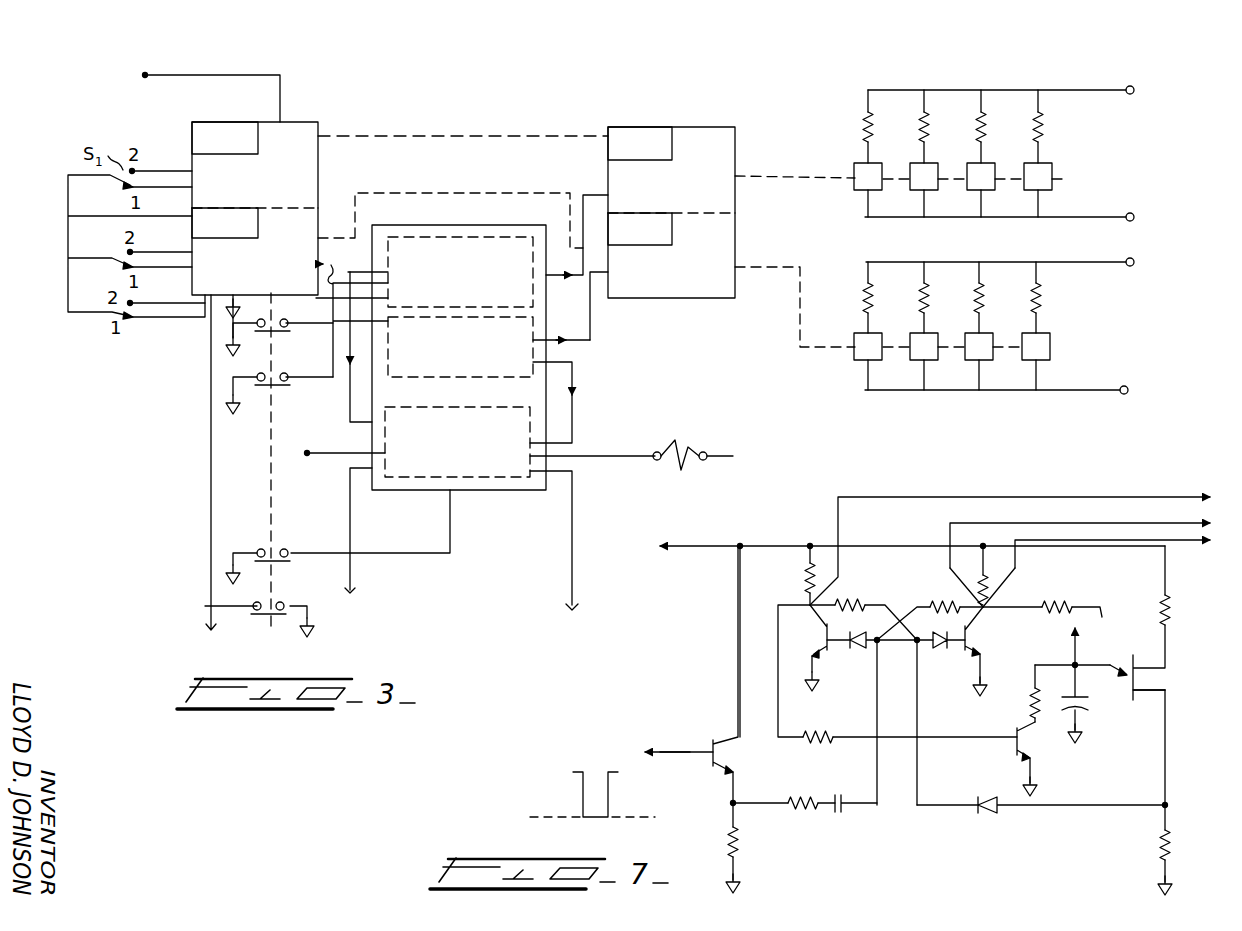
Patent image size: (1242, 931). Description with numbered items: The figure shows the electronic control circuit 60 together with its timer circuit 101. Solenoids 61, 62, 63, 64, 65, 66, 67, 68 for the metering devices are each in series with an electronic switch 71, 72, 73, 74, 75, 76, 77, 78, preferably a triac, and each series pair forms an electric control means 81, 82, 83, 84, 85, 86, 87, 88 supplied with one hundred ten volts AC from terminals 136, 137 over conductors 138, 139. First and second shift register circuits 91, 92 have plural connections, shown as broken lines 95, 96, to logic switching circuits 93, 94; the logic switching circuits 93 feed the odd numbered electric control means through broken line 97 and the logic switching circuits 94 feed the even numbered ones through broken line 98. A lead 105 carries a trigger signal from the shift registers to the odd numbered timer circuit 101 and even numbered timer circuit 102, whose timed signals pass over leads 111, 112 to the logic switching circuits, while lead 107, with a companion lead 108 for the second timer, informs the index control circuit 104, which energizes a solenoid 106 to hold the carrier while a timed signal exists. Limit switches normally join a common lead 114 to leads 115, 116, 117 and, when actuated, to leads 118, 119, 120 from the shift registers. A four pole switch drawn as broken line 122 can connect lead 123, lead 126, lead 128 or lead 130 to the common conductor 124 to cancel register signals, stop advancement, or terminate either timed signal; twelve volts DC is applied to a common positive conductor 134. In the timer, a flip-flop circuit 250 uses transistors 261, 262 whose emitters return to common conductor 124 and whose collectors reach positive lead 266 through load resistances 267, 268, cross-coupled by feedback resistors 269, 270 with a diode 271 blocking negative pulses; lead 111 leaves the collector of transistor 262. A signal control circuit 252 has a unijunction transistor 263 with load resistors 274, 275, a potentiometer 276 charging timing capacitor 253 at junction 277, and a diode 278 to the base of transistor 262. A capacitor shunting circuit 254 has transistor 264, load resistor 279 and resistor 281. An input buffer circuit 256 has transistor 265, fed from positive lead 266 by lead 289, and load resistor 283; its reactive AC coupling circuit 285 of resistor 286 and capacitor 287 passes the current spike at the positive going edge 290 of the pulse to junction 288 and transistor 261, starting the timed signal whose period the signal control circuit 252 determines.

In FIG. 3, the electronic control circuit 60 is at (730, 112).
In FIG. 3, the solenoid 61 is at (869, 120).
In FIG. 3, the solenoid 62 is at (865, 292).
In FIG. 3, the solenoid 63 is at (928, 118).
In FIG. 3, the solenoid 64 is at (932, 312).
In FIG. 3, the solenoid 65 is at (985, 118).
In FIG. 3, the solenoid 66 is at (982, 310).
In FIG. 3, the solenoid 67 is at (1036, 120).
In FIG. 3, the solenoid 68 is at (1040, 310).
In FIG. 3, the electronic switch 71 is at (857, 187).
In FIG. 3, the electronic switch 72 is at (855, 356).
In FIG. 3, the electronic switch 73 is at (915, 192).
In FIG. 3, the electronic switch 74 is at (918, 360).
In FIG. 3, the electronic switch 75 is at (993, 188).
In FIG. 3, the electronic switch 76 is at (978, 360).
In FIG. 3, the electronic switch 77 is at (1068, 180).
In FIG. 3, the electronic switch 78 is at (1024, 352).
In FIG. 3, the electric control means 81 is at (853, 150).
In FIG. 3, the electric control means 82 is at (858, 284).
In FIG. 3, the electric control means 83 is at (907, 130).
In FIG. 3, the electric control means 84 is at (914, 293).
In FIG. 3, the electric control means 85 is at (976, 130).
In FIG. 3, the electric control means 86 is at (990, 300).
In FIG. 3, the electric control means 87 is at (1050, 133).
In FIG. 3, the electric control means 88 is at (1048, 302).
In FIG. 3, the first shift register circuit 91 is at (275, 192).
In FIG. 3, the second shift register circuit 92 is at (289, 264).
In FIG. 3, the logic switching circuits 93 is at (706, 180).
In FIG. 3, the logic switching circuits 94 is at (706, 270).
In FIG. 3, the broken line 95 is at (404, 130).
In FIG. 3, the broken line 96 is at (430, 193).
In FIG. 3, the broken line 97 is at (792, 182).
In FIG. 3, the broken line 98 is at (775, 268).
In FIG. 3, the odd numbered timer circuit 101 is at (510, 273).
In FIG. 3, the even numbered timer circuit 102 is at (522, 345).
In FIG. 3, the index control circuit 104 is at (513, 462).
In FIG. 3, the lead 105 is at (352, 308).
In FIG. 7, the lead 105 is at (672, 757).
In FIG. 3, the solenoid 106 is at (686, 452).
In FIG. 3, the lead 107 is at (350, 410).
In FIG. 7, the lead 107 is at (968, 484).
In FIG. 3, the line 108 is at (575, 432).
In FIG. 3, the lead 111 is at (593, 194).
In FIG. 7, the lead 111 is at (1032, 523).
In FIG. 3, the lead 112 is at (592, 322).
In FIG. 3, the common lead 114 is at (93, 216).
In FIG. 3, the lead 115 is at (183, 191).
In FIG. 3, the lead 116 is at (183, 268).
In FIG. 3, the lead 117 is at (187, 320).
In FIG. 3, the lead 118 is at (155, 171).
In FIG. 3, the lead 119 is at (178, 244).
In FIG. 3, the lead 120 is at (157, 305).
In FIG. 3, the four pole single throw switch 122 is at (270, 445).
In FIG. 3, the lead 123 is at (211, 528).
In FIG. 3, the common conductor 124 is at (242, 307).
In FIG. 7, the common conductor 124 is at (808, 688).
In FIG. 3, the lead 126 is at (350, 557).
In FIG. 3, the lead 128 is at (290, 328).
In FIG. 3, the lead 130 is at (290, 381).
In FIG. 7, the lead 130 is at (1192, 542).
In FIG. 3, the common positive conductor 134 is at (168, 75).
In FIG. 3, the terminal 136 is at (1134, 88).
In FIG. 3, the terminal 137 is at (1134, 216).
In FIG. 3, the conductor 138 is at (1073, 262).
In FIG. 3, the conductor 139 is at (1080, 390).
In FIG. 7, the flip-flop circuit 250 is at (809, 534).
In FIG. 7, the signal control circuit 252 is at (1172, 664).
In FIG. 7, the timing capacitor 253 is at (1097, 715).
In FIG. 7, the capacitor shunting circuit 254 is at (990, 770).
In FIG. 7, the input buffer circuit 256 is at (706, 728).
In FIG. 7, the first electronic switching element 261 is at (823, 636).
In FIG. 7, the second electronic switching element 262 is at (984, 645).
In FIG. 7, the unijunction transistor 263 is at (1160, 698).
In FIG. 7, the transistor 264 is at (1036, 738).
In FIG. 7, the transistor 265 is at (738, 754).
In FIG. 7, the lead 266 is at (688, 546).
In FIG. 7, the load resistance 267 is at (812, 586).
In FIG. 7, the load resistance 268 is at (992, 568).
In FIG. 7, the feedback resistor 269 is at (856, 600).
In FIG. 7, the feedback resistor 270 is at (940, 606).
In FIG. 7, the diode 271 is at (870, 645).
In FIG. 7, the load resistor 274 is at (1168, 612).
In FIG. 7, the load resistor 275 is at (1172, 852).
In FIG. 7, the variable resistor 276 is at (1060, 606).
In FIG. 7, the junction 277 is at (1080, 661).
In FIG. 7, the diode 278 is at (990, 812).
In FIG. 7, the load resistor 279 is at (1035, 695).
In FIG. 7, the resistor 281 is at (842, 742).
In FIG. 7, the load resistor 283 is at (742, 845).
In FIG. 7, the reactive AC coupling circuit 285 is at (822, 820).
In FIG. 7, the resistor 286 is at (808, 800).
In FIG. 7, the capacitor 287 is at (878, 814).
In FIG. 7, the junction 288 is at (882, 648).
In FIG. 7, the lead 289 is at (740, 595).
In FIG. 7, the positive going edge 290 is at (612, 793).